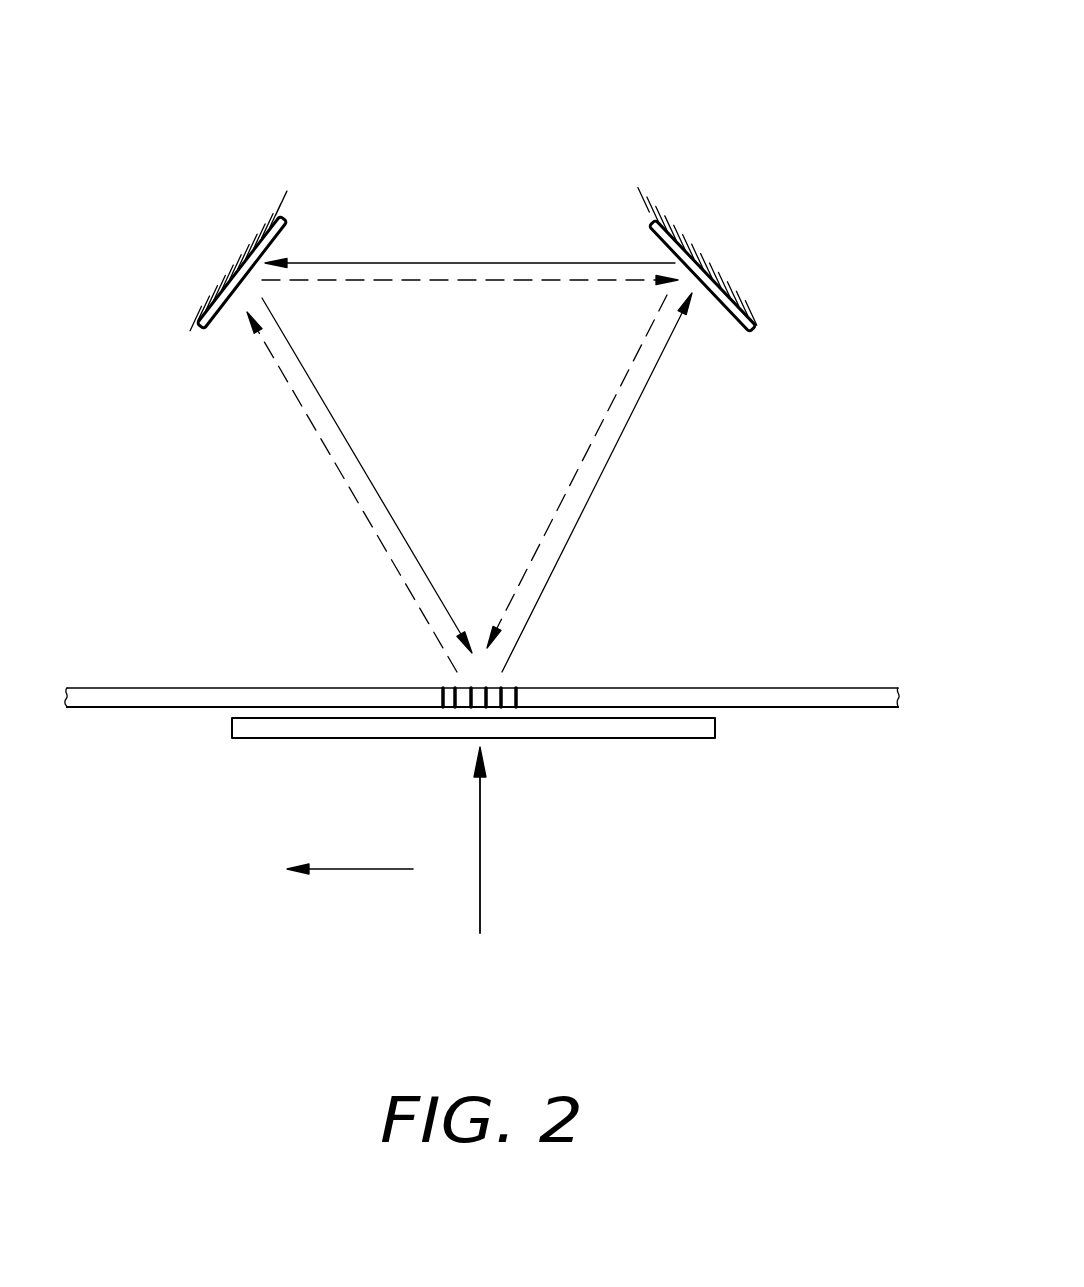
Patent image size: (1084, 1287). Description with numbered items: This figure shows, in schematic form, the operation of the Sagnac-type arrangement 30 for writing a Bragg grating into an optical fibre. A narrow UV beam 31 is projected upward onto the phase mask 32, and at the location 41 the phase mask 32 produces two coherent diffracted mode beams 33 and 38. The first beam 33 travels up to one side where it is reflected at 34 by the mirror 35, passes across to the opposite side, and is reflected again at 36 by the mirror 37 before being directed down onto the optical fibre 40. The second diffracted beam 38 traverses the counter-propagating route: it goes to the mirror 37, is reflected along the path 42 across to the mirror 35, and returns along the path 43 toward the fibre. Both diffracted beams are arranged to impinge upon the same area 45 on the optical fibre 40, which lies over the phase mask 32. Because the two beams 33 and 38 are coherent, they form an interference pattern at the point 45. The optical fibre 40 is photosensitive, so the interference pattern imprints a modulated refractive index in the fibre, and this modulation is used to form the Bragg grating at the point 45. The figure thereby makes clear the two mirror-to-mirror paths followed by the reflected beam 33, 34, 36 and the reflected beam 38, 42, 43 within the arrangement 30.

The arrangement 30 is at (740, 126).
The UV writing beam 31 is at (480, 848).
The phase mask 32 is at (690, 738).
The first diffracted beam 33 is at (590, 502).
The reflection of beam 33 at mirror 35 34 is at (472, 262).
The mirror 35 is at (755, 330).
The reflection of beam 33 at mirror 37 36 is at (337, 428).
The mirror 37 is at (201, 327).
The second diffracted beam 38 is at (325, 453).
The optical fibre 40 is at (777, 687).
The diffraction location on phase mask 41 is at (470, 742).
The reflected path of beam 38 42 is at (404, 280).
The reflected path of beam 38 toward fibre 43 is at (573, 485).
The interference area 45 is at (497, 682).